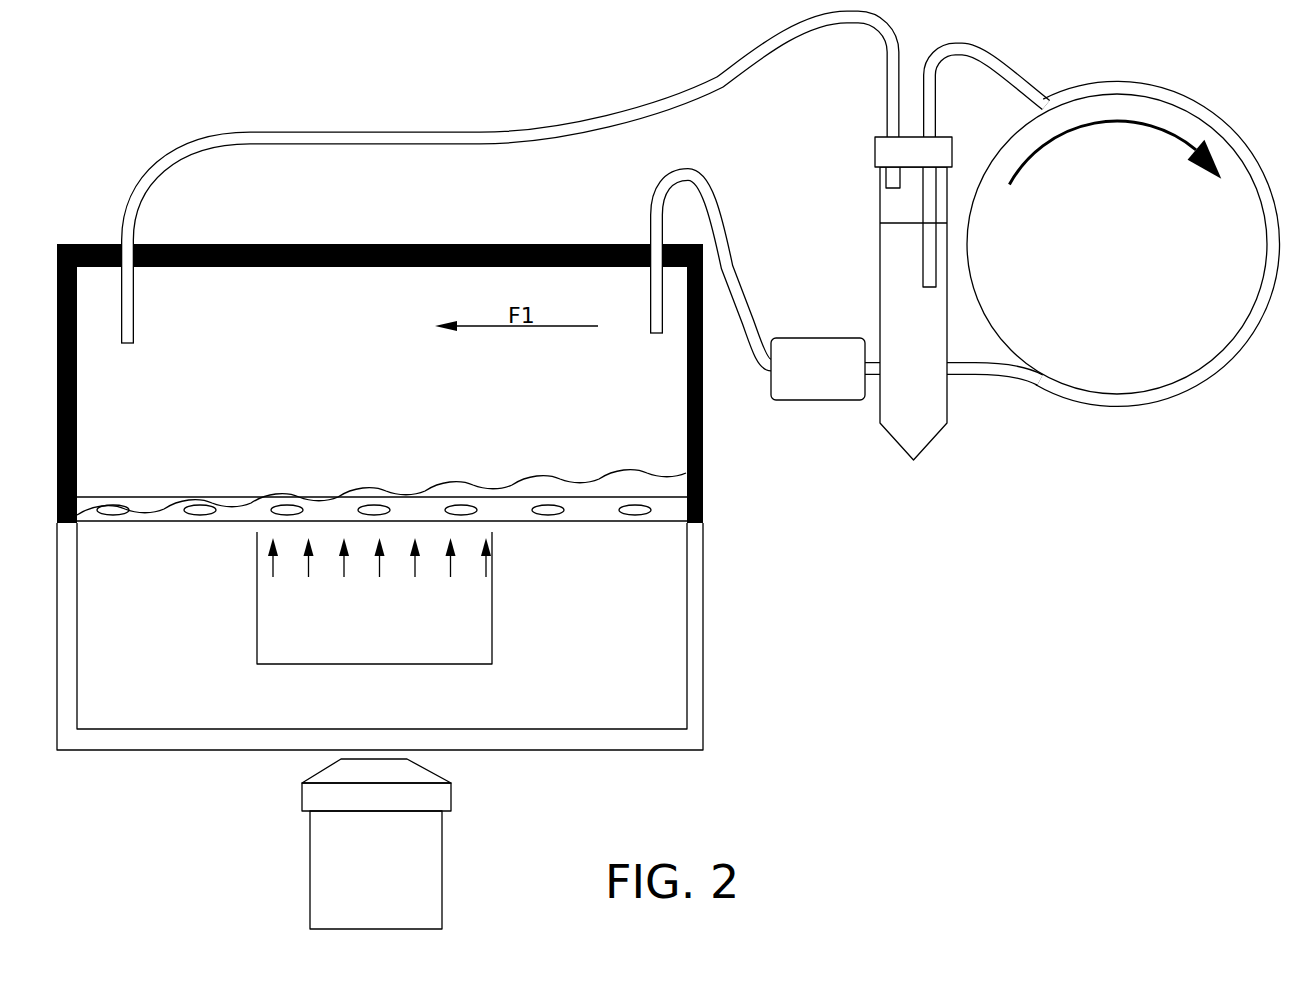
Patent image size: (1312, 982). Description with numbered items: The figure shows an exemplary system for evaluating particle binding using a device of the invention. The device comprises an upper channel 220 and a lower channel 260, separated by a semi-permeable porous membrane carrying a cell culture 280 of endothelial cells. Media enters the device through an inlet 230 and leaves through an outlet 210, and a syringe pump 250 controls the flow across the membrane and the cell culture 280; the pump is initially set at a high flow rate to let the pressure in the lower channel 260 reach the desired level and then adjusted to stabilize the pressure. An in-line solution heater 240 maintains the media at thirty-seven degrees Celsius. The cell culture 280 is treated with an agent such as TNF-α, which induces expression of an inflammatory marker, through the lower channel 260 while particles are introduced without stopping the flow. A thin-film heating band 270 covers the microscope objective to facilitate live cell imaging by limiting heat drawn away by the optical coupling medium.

The outlet 210 is at (128, 343).
The upper channel 220 is at (394, 404).
The inlet 230 is at (656, 333).
The heater 240 is at (840, 383).
The syringe pump 250 is at (1140, 263).
The lower channel 260 is at (396, 653).
The thin-film heating band 270 is at (397, 880).
The cell culture 280 is at (127, 525).